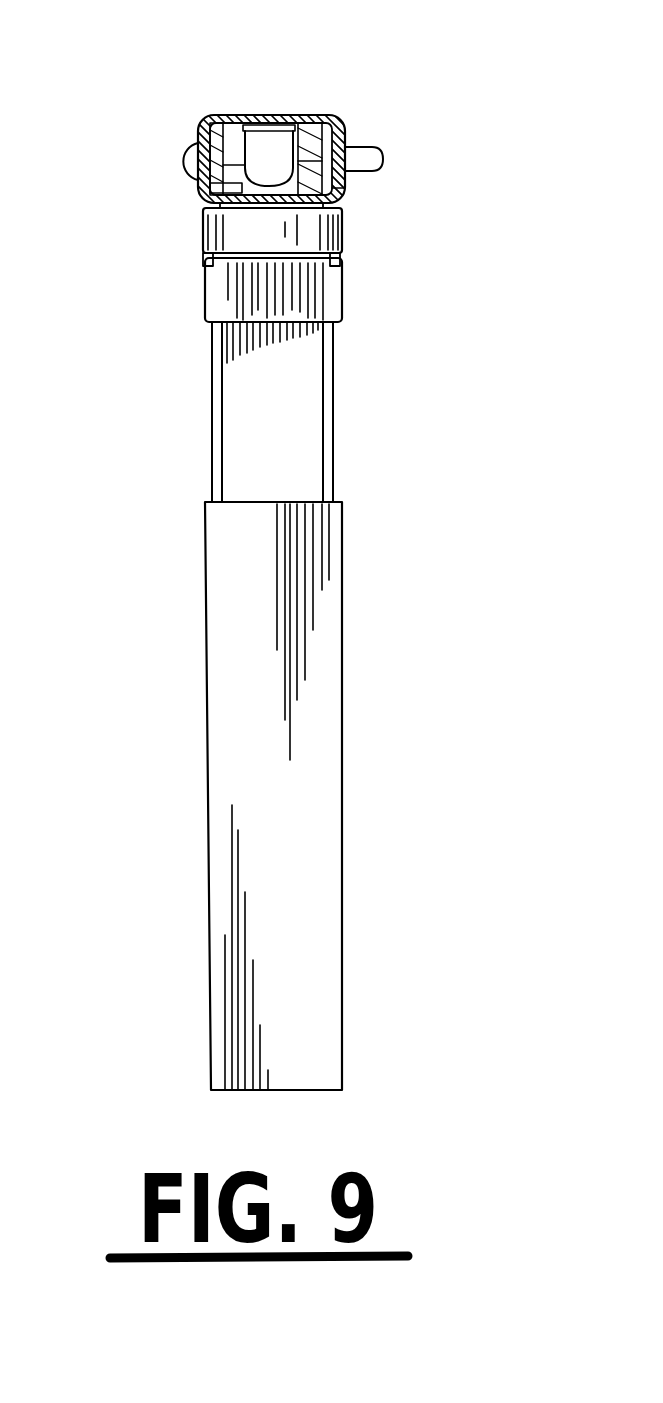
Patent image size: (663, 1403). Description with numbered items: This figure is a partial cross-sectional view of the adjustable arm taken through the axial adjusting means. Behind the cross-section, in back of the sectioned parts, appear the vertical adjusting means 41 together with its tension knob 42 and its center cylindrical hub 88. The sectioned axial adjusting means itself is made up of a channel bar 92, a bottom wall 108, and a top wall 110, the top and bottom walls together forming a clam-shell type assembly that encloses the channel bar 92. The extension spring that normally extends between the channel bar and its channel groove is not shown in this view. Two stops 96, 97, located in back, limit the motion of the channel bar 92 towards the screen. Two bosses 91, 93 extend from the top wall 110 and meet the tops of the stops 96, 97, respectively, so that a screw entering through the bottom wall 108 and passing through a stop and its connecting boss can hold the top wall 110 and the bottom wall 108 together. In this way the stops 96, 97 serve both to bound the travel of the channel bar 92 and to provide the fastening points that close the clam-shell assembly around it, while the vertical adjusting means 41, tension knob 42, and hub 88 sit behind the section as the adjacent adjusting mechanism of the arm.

The vertical adjusting means 41 is at (342, 124).
The tension knob 42 is at (383, 153).
The center cylindrical hub 88 is at (252, 206).
The boss 91 is at (332, 118).
The channel bar 92 is at (290, 118).
The boss 93 is at (212, 118).
The stop 96 is at (323, 213).
The stop 97 is at (202, 181).
The bottom wall 108 is at (345, 190).
The top wall 110 is at (263, 115).